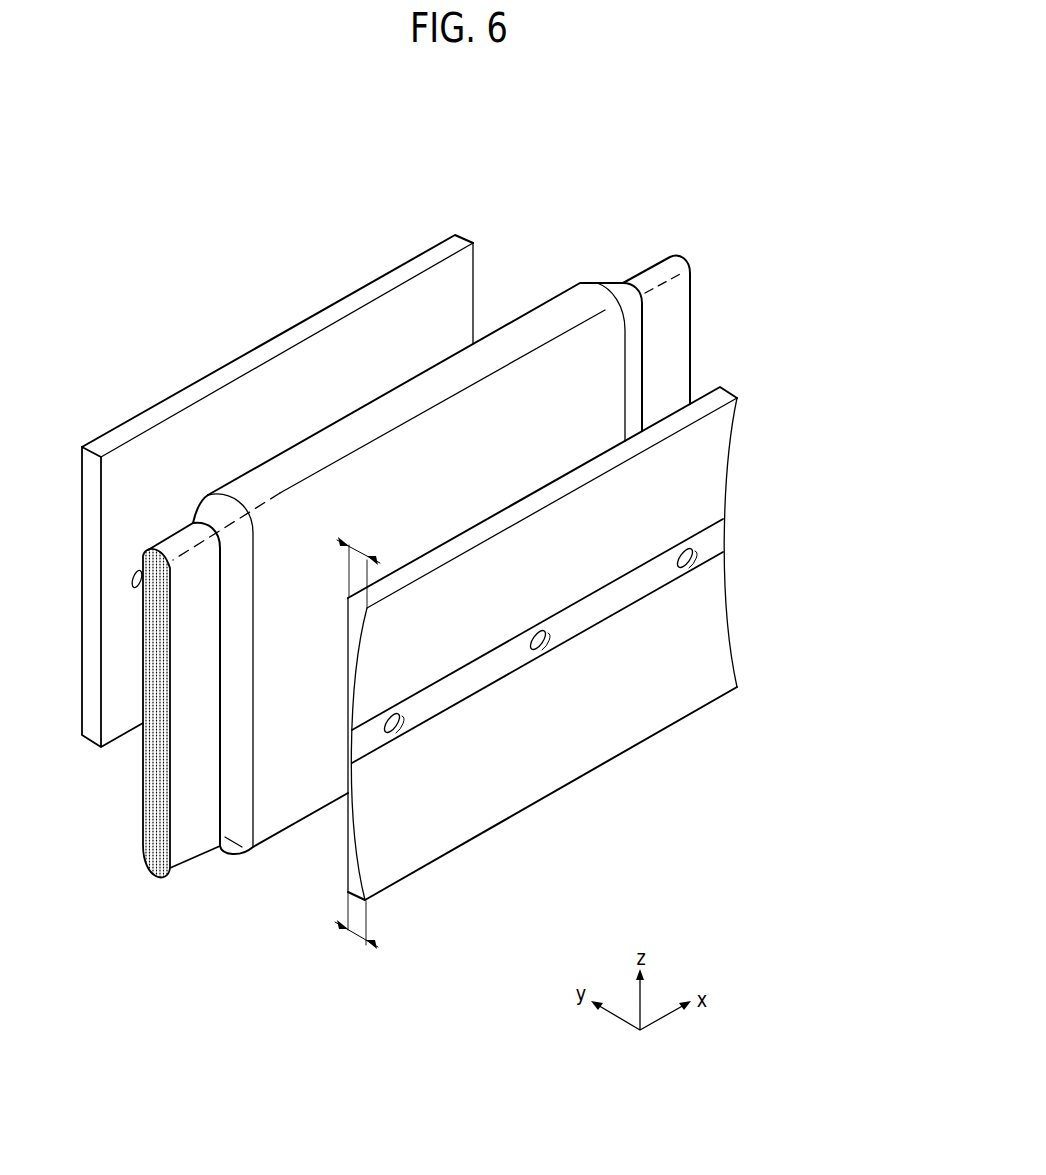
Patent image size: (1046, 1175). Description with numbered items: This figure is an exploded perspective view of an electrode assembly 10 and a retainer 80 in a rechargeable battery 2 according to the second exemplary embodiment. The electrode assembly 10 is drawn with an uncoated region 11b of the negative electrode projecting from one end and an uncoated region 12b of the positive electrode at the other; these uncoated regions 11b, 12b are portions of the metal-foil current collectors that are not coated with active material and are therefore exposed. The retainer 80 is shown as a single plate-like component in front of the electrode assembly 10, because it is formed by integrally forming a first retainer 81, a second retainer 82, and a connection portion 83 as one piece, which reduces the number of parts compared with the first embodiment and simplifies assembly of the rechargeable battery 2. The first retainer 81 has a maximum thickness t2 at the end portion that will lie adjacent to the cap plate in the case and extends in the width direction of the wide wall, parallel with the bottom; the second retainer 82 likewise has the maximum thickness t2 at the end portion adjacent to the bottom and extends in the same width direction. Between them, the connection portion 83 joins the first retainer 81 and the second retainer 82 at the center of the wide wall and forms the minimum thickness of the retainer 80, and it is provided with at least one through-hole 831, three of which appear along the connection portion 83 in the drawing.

The rechargeable battery 2 is at (453, 545).
The electrode assembly 10 is at (584, 268).
The uncoated region 11b is at (188, 842).
The uncoated region 12b is at (672, 328).
The retainer 80 is at (779, 835).
The first retainer 81 is at (712, 467).
The second retainer 82 is at (715, 632).
The connection portion 83 is at (712, 542).
The through-hole 831 is at (692, 562).
The maximum thickness t2 is at (357, 743).